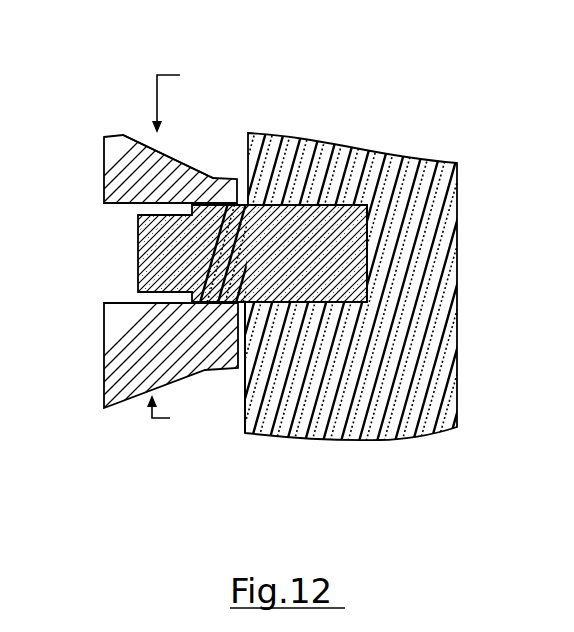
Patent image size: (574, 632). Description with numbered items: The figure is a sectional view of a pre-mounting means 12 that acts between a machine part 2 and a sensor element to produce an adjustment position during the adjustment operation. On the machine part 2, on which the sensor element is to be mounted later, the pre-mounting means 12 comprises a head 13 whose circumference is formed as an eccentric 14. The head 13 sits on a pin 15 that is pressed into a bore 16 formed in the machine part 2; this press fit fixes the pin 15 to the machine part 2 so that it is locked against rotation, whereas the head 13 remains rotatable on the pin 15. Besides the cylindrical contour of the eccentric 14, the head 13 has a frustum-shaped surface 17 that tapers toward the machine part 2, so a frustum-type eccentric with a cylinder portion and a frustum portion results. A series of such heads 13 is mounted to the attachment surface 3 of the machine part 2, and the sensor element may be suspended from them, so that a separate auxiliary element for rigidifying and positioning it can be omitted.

The machine part 2 is at (433, 368).
The attachment surface 3 is at (245, 411).
The pre-mounting means 12 is at (75, 466).
The head 13 is at (110, 352).
The eccentric 14 is at (104, 137).
The pin 15 is at (137, 272).
The bore 16 is at (367, 253).
The frustum-shaped surface 17 is at (178, 163).